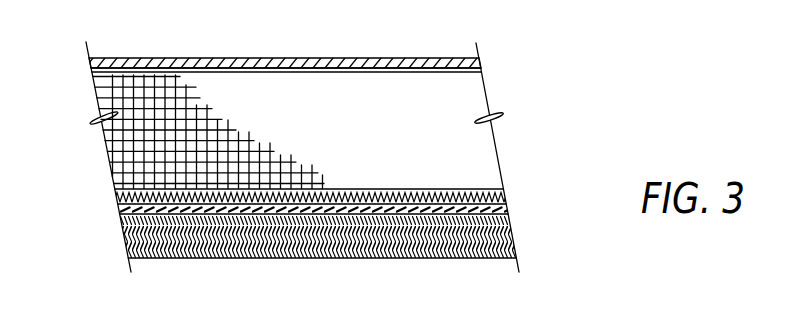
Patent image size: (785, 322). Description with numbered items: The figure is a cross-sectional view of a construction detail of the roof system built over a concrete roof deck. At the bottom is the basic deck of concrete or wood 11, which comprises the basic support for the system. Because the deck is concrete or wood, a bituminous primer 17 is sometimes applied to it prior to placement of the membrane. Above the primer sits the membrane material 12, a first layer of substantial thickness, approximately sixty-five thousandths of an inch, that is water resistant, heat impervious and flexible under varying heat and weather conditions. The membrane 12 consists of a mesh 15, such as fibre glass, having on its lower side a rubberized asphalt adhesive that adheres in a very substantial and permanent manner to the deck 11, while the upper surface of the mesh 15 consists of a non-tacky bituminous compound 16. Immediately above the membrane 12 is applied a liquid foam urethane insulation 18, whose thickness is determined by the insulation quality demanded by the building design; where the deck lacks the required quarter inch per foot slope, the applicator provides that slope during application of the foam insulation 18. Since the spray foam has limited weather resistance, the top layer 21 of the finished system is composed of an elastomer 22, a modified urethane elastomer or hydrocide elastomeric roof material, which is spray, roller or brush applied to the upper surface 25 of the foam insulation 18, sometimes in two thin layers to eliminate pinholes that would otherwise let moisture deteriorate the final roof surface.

The concrete or wood deck 11 is at (408, 266).
The membrane material 12 is at (118, 199).
The mesh 15 is at (516, 212).
The non-tacky bituminous compound 16 is at (511, 195).
The bituminous primer 17 is at (119, 213).
The liquid foam urethane insulation 18 is at (128, 146).
The top layer 21 is at (230, 57).
The elastomer 22 is at (88, 62).
The upper surface of foam insulation 25 is at (341, 72).